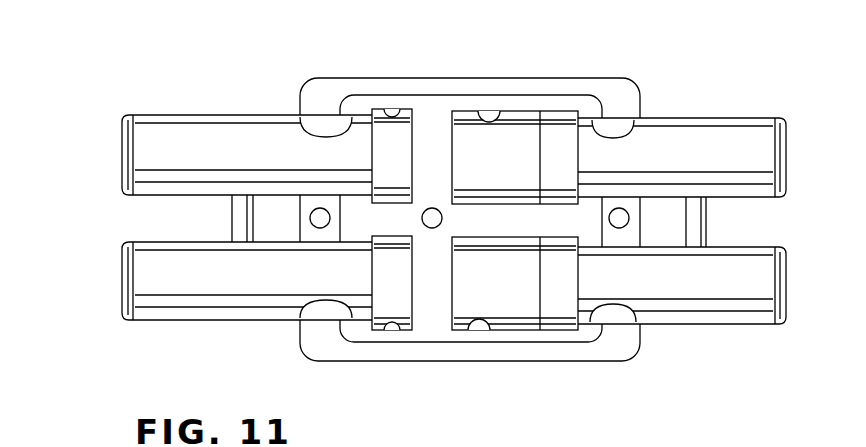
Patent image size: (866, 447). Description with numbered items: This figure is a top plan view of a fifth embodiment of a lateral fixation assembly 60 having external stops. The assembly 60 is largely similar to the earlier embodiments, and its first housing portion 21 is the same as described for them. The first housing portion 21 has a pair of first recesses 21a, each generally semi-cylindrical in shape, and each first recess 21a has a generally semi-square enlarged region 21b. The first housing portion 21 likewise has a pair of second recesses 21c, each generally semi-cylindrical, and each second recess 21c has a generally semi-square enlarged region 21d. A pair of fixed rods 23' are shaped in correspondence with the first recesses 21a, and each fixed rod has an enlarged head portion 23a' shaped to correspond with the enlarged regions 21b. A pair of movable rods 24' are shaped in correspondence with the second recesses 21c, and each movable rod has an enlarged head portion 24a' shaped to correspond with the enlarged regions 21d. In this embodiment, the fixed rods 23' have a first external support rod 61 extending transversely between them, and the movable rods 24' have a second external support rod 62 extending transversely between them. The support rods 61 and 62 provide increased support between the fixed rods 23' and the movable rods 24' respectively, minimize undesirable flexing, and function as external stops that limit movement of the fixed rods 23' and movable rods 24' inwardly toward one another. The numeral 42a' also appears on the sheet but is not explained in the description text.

The lateral fixation assembly 60 is at (453, 223).
The first housing portion 21 is at (443, 93).
The first recesses 21a is at (292, 116).
The enlarged regions 21b is at (365, 222).
The second recesses 21c is at (610, 128).
The enlarged regions 21d is at (537, 223).
The fixed rods 23' is at (207, 207).
The enlarged head portion 23a' is at (405, 222).
The movable rods 24' is at (721, 230).
The enlarged head portion 24a' is at (538, 223).
The first external support rod 61 is at (236, 213).
The second external support rod 62 is at (695, 217).
The end portion 42a' is at (814, 434).